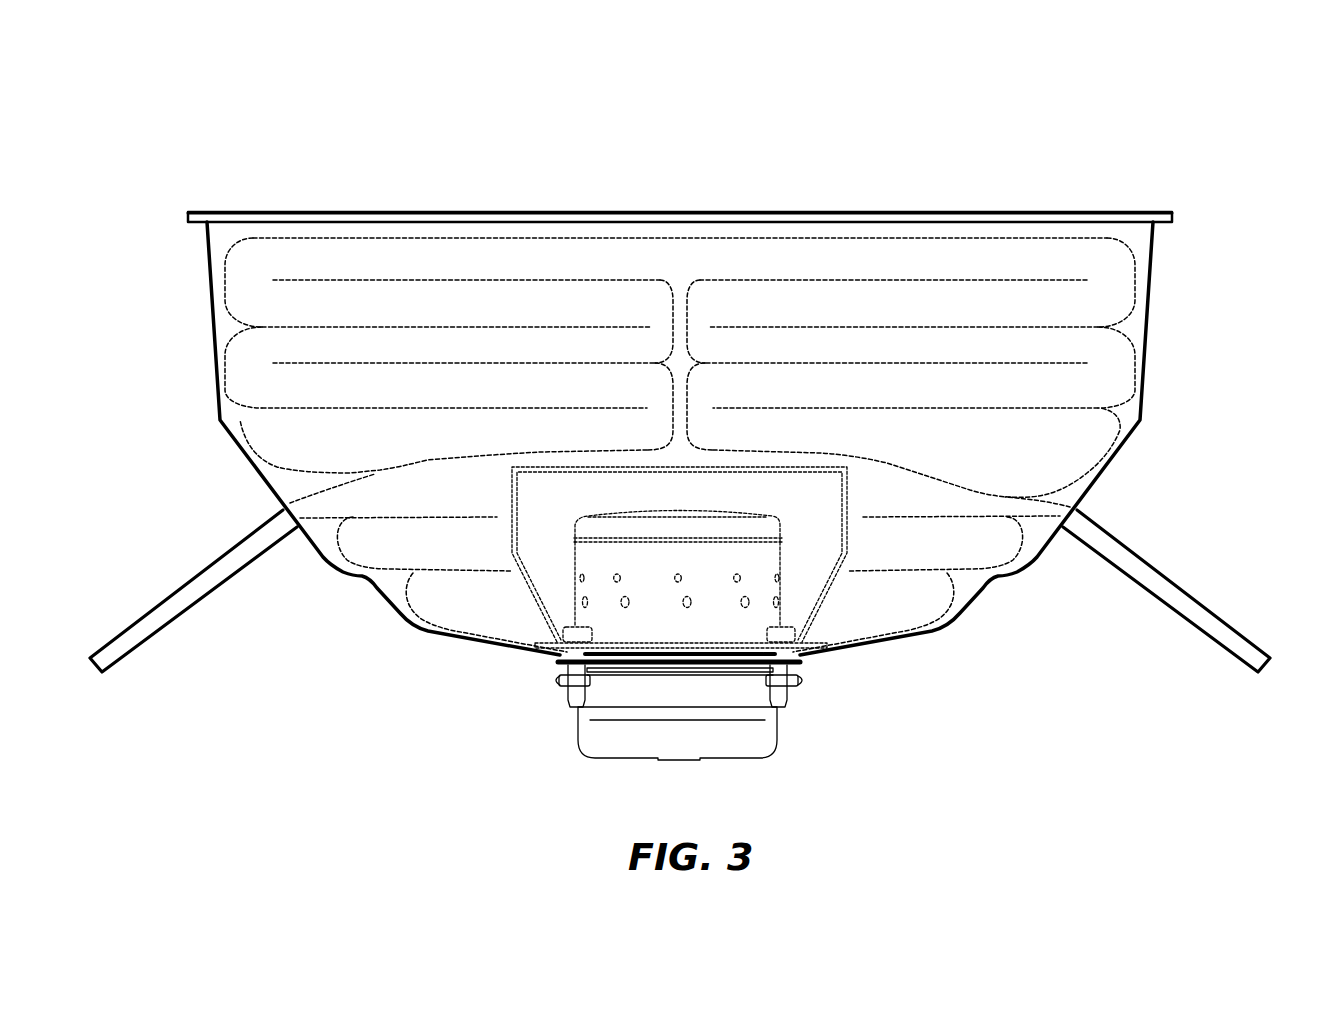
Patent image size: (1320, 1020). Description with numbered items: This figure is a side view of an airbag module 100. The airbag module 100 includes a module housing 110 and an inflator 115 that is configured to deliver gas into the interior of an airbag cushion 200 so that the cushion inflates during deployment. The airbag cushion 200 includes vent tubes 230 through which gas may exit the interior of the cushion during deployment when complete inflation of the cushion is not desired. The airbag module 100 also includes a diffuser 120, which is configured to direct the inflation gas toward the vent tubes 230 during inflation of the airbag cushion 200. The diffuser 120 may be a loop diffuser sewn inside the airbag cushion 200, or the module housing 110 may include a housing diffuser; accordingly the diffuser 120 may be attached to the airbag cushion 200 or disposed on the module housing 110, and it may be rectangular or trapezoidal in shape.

The airbag module 100 is at (1142, 131).
The module housing 110 is at (213, 317).
The inflator 115 is at (793, 592).
The diffuser 120 is at (530, 597).
The airbag cushion 200 is at (1053, 355).
The vent tubes 230 is at (180, 602).